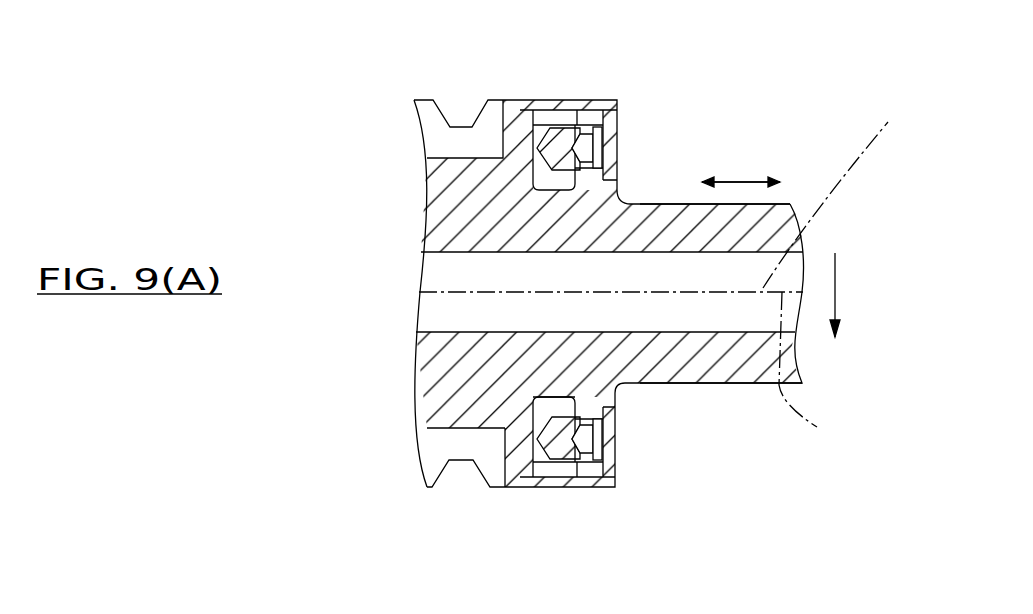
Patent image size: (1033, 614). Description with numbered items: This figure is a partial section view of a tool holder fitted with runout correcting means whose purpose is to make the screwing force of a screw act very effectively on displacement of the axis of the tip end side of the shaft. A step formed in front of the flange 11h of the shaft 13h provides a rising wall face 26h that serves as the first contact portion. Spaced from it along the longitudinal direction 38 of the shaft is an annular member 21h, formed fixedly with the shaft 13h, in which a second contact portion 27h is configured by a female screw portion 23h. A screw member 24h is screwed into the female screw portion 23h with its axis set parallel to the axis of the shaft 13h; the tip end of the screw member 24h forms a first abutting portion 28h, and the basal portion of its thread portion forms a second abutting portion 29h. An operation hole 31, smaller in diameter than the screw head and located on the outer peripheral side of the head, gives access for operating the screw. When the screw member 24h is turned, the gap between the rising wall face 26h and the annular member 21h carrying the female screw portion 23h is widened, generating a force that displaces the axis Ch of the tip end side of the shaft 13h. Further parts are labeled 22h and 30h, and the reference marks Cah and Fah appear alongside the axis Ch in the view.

The flange 11h is at (507, 138).
The shaft 13h is at (727, 372).
The annular member 21h is at (592, 115).
The hub 22h is at (553, 405).
The female screw portion 23h is at (612, 105).
The screw member 24h is at (537, 157).
The rising wall face 26h is at (533, 148).
The second contact portion 27h is at (600, 178).
The first abutting portion 28h is at (555, 113).
The second abutting portion 29h is at (745, 180).
The thin ring 30h is at (537, 106).
The operation hole 31 is at (615, 428).
The longitudinal direction 38 is at (750, 172).
The axis of ball contact Cah is at (843, 189).
The axis of the tip end side of the shaft Ch is at (803, 377).
The force Fah is at (838, 258).